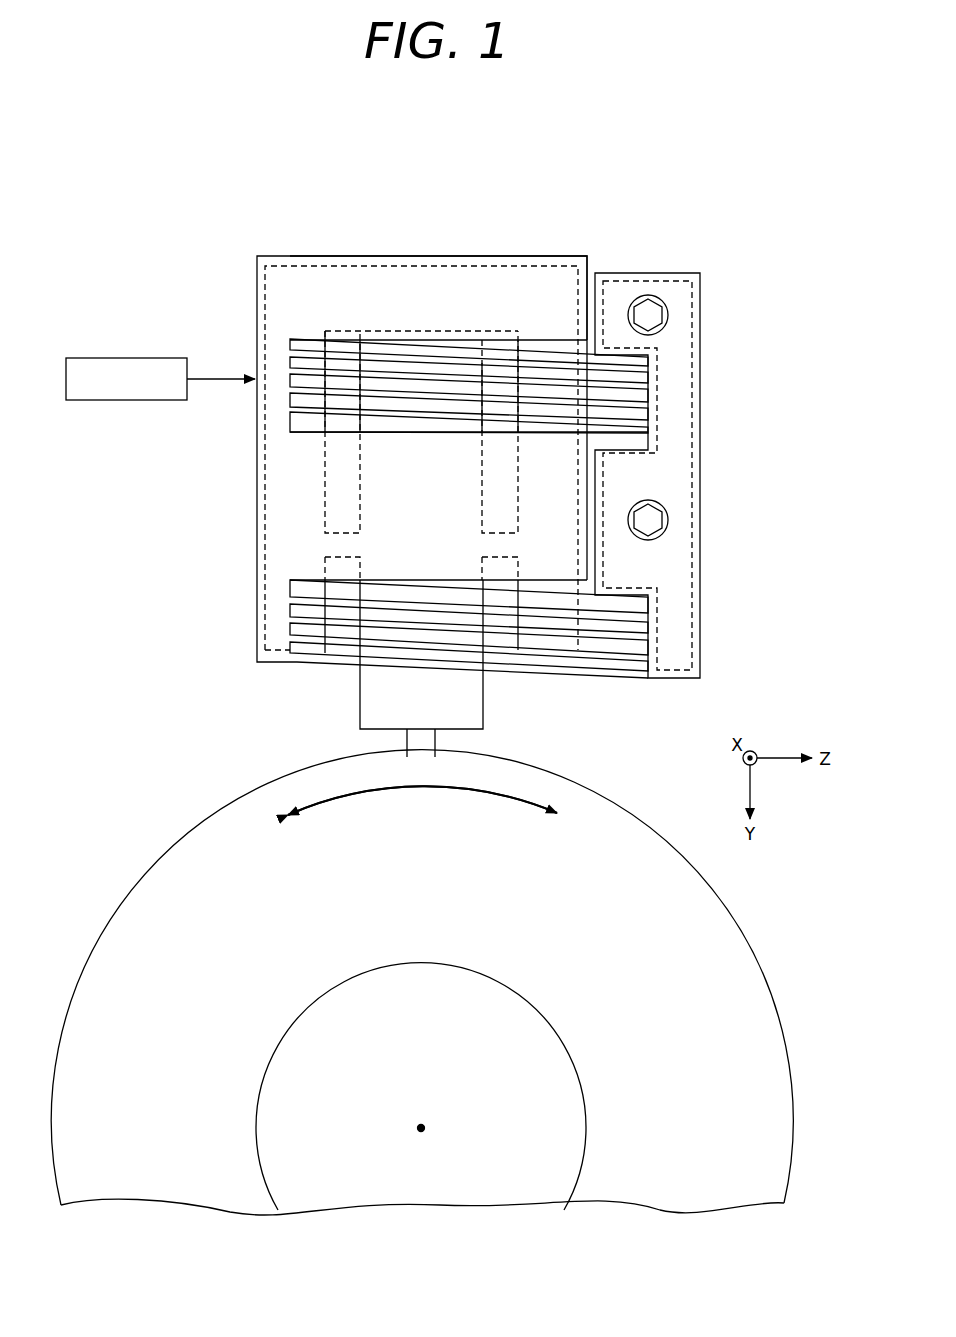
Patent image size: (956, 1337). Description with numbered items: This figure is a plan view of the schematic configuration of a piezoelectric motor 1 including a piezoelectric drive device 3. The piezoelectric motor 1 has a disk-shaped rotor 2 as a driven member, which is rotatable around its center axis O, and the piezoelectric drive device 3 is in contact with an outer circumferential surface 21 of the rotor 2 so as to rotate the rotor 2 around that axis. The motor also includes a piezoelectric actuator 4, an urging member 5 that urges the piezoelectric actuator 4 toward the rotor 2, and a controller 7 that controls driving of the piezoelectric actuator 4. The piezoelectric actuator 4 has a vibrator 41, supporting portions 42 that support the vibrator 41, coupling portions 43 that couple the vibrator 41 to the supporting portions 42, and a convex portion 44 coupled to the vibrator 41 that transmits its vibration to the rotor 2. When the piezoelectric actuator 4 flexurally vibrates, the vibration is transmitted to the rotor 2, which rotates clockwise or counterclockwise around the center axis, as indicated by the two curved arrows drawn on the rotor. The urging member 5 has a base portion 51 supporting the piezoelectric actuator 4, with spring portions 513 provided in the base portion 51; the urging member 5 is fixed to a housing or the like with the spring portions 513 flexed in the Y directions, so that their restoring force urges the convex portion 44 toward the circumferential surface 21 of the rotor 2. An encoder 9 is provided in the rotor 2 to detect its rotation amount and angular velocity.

The piezoelectric motor 1 is at (684, 181).
The rotor 2 is at (205, 826).
The outer circumferential surface 21 is at (787, 1010).
The encoder 9 is at (249, 1095).
The piezoelectric drive device 3 is at (490, 244).
The piezoelectric actuator 4 is at (358, 697).
The vibrator 41 is at (468, 697).
The convex portion 44 is at (422, 745).
The supporting portions 42 is at (296, 482).
The coupling portions 43 is at (337, 545).
The urging member 5 is at (705, 462).
The base portion 51 is at (366, 305).
The spring portions 513 is at (437, 350).
The controller 7 is at (125, 358).